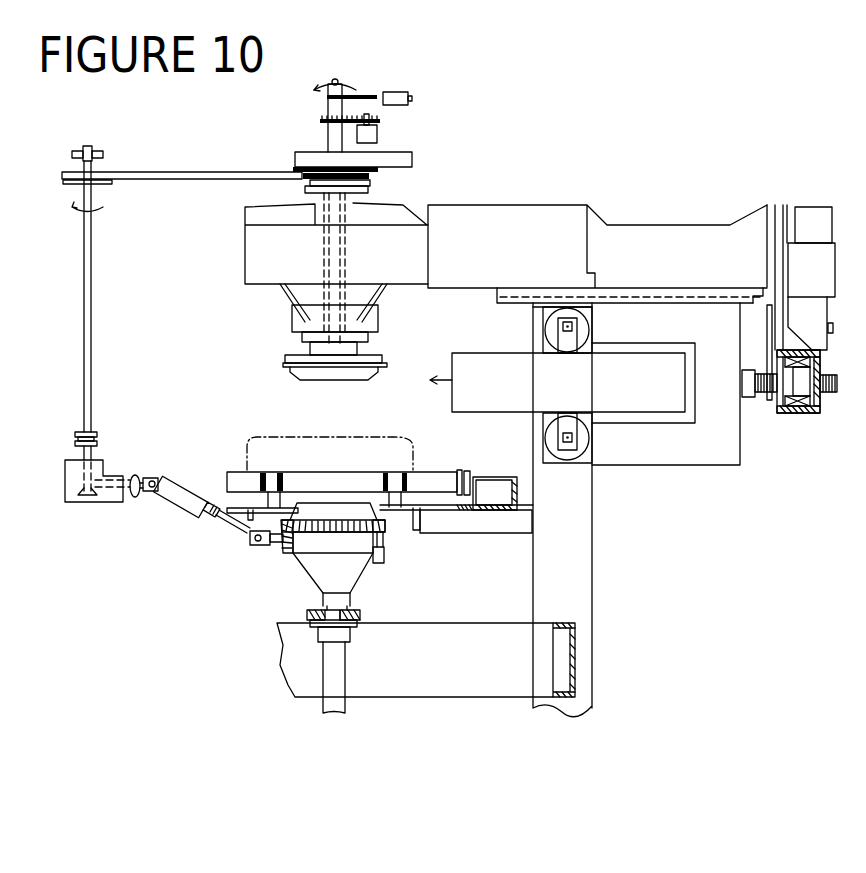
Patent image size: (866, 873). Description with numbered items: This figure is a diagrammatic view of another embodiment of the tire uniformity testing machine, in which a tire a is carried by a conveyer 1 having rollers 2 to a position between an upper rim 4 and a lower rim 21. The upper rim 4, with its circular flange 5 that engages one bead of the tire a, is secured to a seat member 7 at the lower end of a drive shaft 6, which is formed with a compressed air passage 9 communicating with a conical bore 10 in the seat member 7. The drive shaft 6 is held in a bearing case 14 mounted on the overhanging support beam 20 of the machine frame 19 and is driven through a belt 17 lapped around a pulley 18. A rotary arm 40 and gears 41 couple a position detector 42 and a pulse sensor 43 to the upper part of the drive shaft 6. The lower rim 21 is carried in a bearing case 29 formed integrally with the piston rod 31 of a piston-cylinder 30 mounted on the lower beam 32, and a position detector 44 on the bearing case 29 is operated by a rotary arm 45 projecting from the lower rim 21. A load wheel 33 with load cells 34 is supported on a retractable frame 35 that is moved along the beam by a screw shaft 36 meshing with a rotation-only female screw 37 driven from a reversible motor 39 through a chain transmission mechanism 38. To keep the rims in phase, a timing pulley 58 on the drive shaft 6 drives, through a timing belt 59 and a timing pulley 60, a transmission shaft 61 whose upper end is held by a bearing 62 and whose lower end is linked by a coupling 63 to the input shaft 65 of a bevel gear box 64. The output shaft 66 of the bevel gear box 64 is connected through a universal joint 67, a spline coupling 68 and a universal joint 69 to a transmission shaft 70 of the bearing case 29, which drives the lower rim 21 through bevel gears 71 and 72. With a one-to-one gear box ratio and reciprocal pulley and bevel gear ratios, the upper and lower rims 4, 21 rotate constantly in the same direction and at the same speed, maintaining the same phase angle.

The conveyer 1 is at (222, 475).
The rollers 2 is at (238, 472).
The upper rim 4 is at (359, 379).
The circular flange 5 is at (384, 367).
The drive shaft 6 is at (350, 232).
The seat member 7 is at (368, 356).
The compressed air passage 9 is at (325, 262).
The conical bore 10 is at (338, 360).
The bearing case 14 is at (292, 318).
The belt 17 is at (400, 156).
The pulley 18 is at (310, 152).
The machine frame 19 is at (605, 544).
The support beam 20 is at (538, 205).
The lower rim 21 is at (345, 503).
The bearing case 29 is at (296, 556).
The piston-cylinder 30 is at (328, 673).
The piston rod 31 is at (328, 608).
The lower beam 32 is at (470, 642).
The load wheel 33 is at (466, 363).
The load cells 34 is at (546, 332).
The frame 35 is at (700, 452).
The screw shaft 36 is at (763, 396).
The female screw 37 is at (797, 382).
The chain transmission mechanism 38 is at (761, 338).
The reversible motor 39 is at (808, 207).
The rotary arm 40 is at (352, 96).
The gears 41 is at (346, 118).
The position detector 42 is at (405, 92).
The pulse sensor 43 is at (380, 132).
The position detector 44 is at (380, 564).
The rotary arm 45 is at (384, 541).
The timing pulley 58 is at (305, 183).
The timing belt 59 is at (185, 172).
The timing pulley 60 is at (105, 184).
The transmission shaft 61 is at (84, 265).
The bearing 62 is at (112, 130).
The coupling 63 is at (100, 433).
The bevel gear box 64 is at (84, 503).
The input shaft 65 is at (83, 455).
The output shaft 66 is at (140, 480).
The universal joint 67 is at (152, 492).
The spline coupling 68 is at (178, 508).
The universal joint 69 is at (252, 540).
The transmission shaft 70 is at (280, 545).
The bevel gear 71 is at (287, 548).
The bevel gear 72 is at (386, 528).
The tire a is at (294, 437).